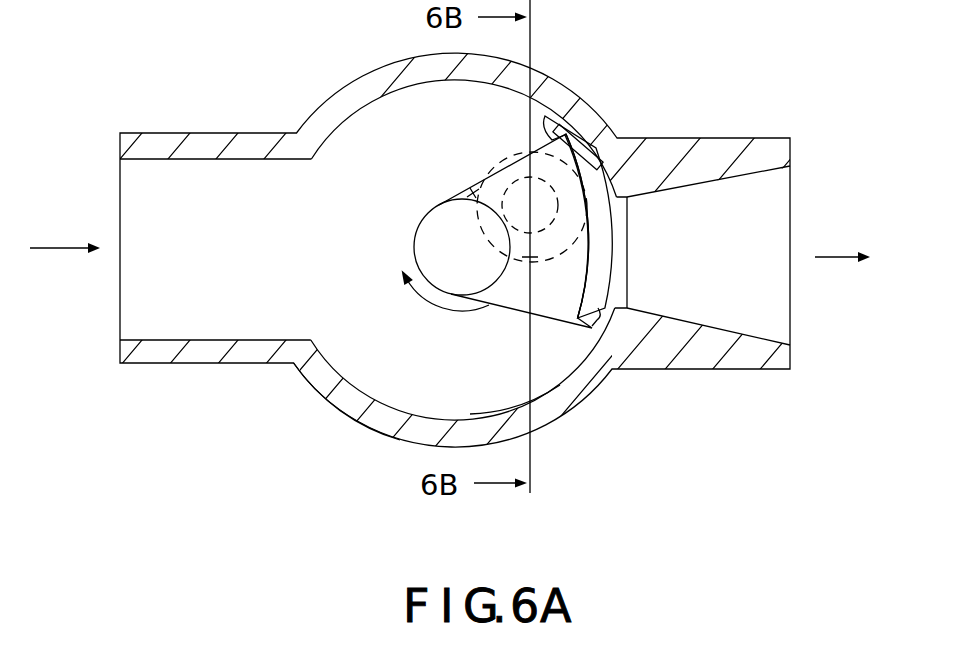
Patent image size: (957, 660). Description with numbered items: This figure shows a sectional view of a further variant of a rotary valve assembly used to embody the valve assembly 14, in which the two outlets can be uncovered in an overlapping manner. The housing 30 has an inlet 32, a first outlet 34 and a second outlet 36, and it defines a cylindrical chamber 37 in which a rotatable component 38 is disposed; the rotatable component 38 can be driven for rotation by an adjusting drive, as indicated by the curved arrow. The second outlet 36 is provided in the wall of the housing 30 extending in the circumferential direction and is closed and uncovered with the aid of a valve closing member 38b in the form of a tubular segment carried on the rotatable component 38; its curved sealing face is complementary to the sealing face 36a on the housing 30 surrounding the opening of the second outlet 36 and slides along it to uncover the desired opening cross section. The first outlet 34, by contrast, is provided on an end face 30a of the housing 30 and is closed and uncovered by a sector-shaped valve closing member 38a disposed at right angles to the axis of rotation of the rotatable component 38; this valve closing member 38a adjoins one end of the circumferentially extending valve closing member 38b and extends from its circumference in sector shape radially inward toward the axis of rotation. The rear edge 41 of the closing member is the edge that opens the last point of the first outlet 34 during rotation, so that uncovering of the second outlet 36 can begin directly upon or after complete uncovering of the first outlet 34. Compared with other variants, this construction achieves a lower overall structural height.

The valve assembly 14 is at (288, 112).
The housing 30 is at (586, 406).
The end face 30a is at (537, 397).
The inlet 32 is at (132, 339).
The first outlet 34 is at (594, 127).
The second outlet 36 is at (770, 337).
The sealing face 36a is at (604, 321).
The cylindrical chamber 37 is at (345, 368).
The rotatable component 38 is at (430, 210).
The sector-shaped valve closing member 38a is at (545, 307).
The valve closing member 38b is at (565, 330).
The rear edge 41 is at (550, 134).